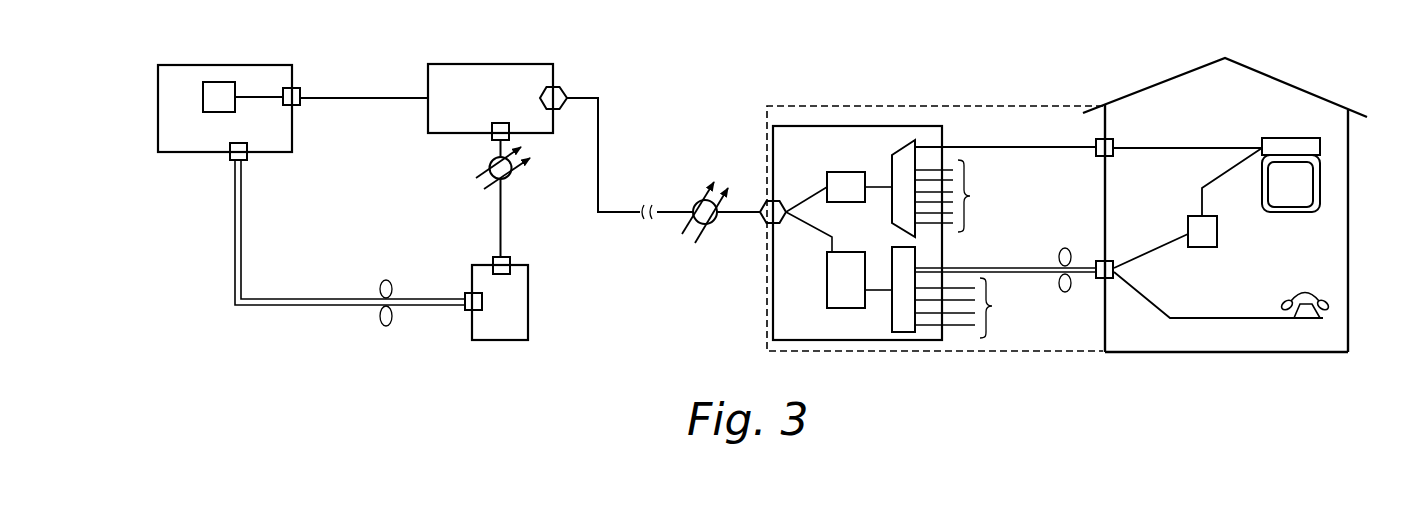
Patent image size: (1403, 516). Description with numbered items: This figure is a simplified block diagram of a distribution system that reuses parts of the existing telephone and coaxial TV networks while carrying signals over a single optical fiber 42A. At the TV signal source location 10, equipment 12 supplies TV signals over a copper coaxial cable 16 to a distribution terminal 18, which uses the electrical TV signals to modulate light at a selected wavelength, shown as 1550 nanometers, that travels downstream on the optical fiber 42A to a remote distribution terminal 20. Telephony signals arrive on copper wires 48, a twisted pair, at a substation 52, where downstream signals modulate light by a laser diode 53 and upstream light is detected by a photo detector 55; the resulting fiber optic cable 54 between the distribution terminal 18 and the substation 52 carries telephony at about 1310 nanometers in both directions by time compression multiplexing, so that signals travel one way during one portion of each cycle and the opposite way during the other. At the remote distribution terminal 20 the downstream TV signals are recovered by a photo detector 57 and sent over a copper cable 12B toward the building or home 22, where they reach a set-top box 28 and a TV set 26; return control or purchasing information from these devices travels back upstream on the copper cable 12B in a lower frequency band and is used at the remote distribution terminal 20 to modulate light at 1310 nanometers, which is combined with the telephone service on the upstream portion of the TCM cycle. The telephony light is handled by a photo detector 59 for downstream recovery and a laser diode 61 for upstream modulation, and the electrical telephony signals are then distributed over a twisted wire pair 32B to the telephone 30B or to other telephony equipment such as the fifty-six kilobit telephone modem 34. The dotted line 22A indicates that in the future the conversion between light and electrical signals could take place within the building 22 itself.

The TV signal source location 10 is at (175, 99).
The equipment 12 is at (222, 113).
The coaxial cable 16 is at (367, 100).
The distribution terminal 18 is at (500, 107).
The optical fiber 42A is at (598, 120).
The 1550 nanometer light 1550 is at (738, 163).
The 1310 nanometer light 1310 is at (732, 252).
The fiber optic cable 54 is at (500, 217).
The copper wires 48 is at (333, 297).
The substation 52 is at (530, 302).
The photo detector 55 is at (520, 287).
The laser diode 53 is at (520, 320).
The dotted line 22A is at (845, 106).
The remote distribution terminal 20 is at (811, 264).
The photo detector 57 is at (838, 172).
The photo detector 59 is at (846, 252).
The laser diode 61 is at (840, 308).
The copper cable 12B is at (1066, 147).
The twisted wire pair 32B is at (1030, 274).
The building or home 22 is at (1118, 102).
The 56K telephone modem 34 is at (1186, 223).
The set-top box 28 is at (1290, 143).
The TV set 26 is at (1285, 197).
The telephone 30B is at (1293, 295).